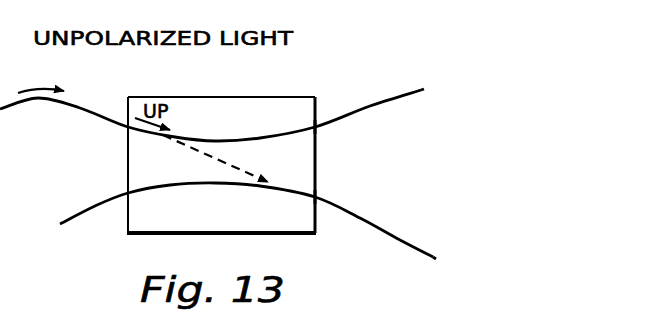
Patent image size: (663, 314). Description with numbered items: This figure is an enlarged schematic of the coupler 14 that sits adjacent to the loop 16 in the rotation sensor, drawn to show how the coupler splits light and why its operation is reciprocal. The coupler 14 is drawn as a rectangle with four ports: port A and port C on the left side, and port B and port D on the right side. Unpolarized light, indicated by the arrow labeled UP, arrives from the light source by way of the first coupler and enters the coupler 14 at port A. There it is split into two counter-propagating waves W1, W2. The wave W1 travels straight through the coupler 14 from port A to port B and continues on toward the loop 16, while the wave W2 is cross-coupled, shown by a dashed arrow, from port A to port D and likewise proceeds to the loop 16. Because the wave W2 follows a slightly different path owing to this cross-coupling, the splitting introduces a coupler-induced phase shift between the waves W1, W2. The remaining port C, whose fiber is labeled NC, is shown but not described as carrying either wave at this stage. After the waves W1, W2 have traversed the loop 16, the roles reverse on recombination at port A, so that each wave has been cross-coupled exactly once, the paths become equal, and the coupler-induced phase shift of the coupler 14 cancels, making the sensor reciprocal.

The coupler 14 is at (265, 97).
The loop 16 is at (494, 178).
The unpolarized light UP is at (88, 48).
The wave W1 is at (373, 101).
The wave W2 is at (388, 222).
The not connected port NC is at (78, 223).
The port A is at (118, 117).
The port B is at (324, 137).
The port C is at (119, 189).
The port D is at (326, 211).